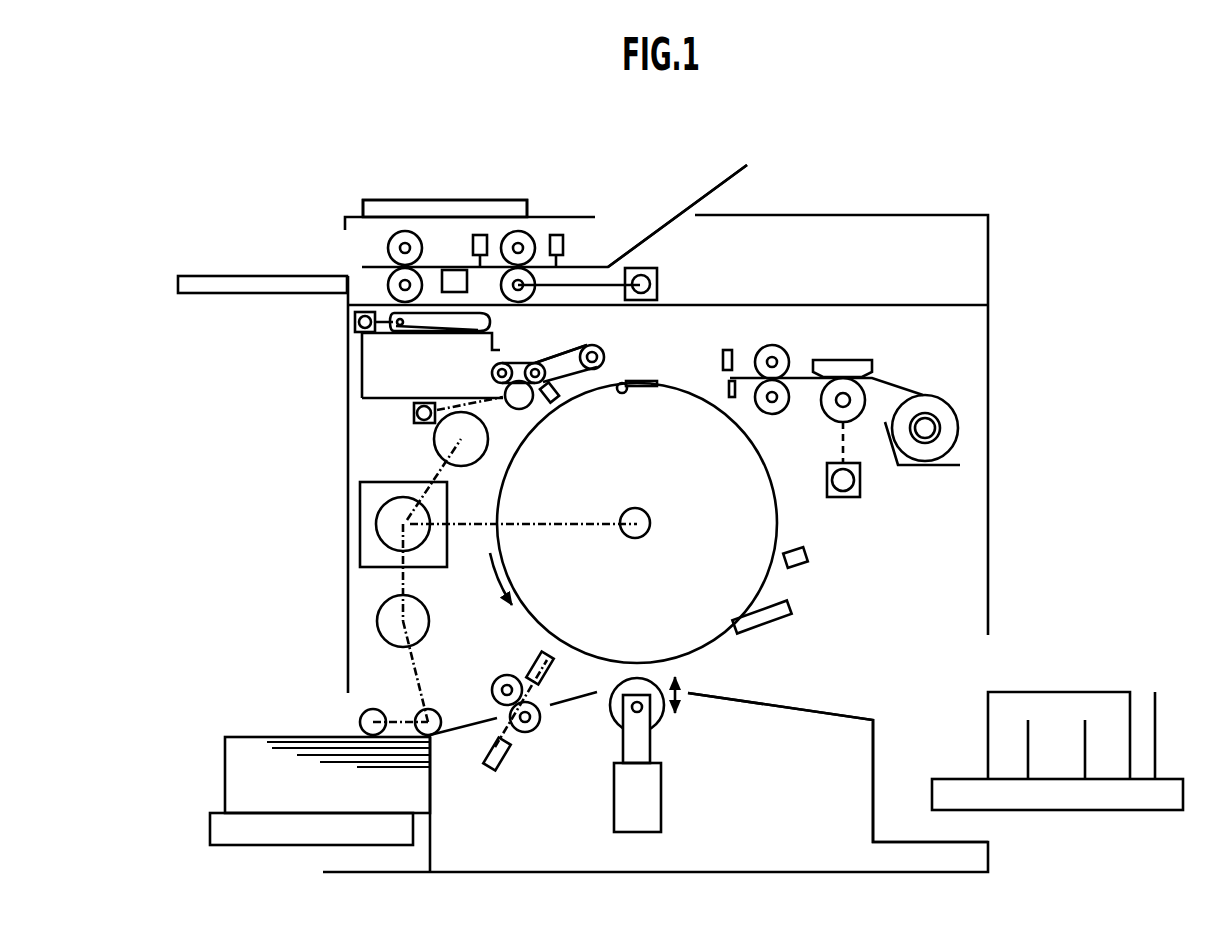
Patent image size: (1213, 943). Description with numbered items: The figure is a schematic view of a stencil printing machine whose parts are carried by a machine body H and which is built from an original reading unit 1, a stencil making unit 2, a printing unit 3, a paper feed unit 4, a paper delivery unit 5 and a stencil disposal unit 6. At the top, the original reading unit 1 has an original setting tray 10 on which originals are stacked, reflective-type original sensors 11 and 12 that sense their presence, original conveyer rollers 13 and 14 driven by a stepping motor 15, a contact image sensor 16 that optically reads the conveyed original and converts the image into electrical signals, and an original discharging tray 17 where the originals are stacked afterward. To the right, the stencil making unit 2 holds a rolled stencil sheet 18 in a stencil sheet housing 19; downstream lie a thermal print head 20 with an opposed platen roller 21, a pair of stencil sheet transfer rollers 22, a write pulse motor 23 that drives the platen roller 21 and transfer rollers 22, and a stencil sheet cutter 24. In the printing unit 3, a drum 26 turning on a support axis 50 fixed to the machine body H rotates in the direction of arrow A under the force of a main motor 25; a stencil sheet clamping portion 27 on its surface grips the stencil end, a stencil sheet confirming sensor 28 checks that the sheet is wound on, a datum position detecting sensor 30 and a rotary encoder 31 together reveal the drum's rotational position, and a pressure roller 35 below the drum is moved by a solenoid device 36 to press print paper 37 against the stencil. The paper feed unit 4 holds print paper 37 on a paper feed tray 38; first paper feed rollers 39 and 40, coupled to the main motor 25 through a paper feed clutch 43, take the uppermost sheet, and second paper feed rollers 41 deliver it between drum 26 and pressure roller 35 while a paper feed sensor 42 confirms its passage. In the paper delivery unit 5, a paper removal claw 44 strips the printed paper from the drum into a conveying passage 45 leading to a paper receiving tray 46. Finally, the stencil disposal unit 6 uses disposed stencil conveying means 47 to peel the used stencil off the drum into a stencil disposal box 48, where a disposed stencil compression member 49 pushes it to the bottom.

The original reading unit 1 is at (538, 214).
The stencil making unit 2 is at (876, 347).
The printing unit 3 is at (694, 671).
The paper feed unit 4 is at (379, 677).
The paper delivery unit 5 is at (881, 661).
The stencil disposal unit 6 is at (608, 342).
The original setting tray 10 is at (700, 197).
The reflective-type original sensor 11 is at (558, 234).
The reflective-type original sensor 12 is at (477, 234).
The original conveyer roller 13 is at (505, 240).
The original conveyer roller 14 is at (389, 268).
The stepping motor 15 is at (658, 271).
The contact image sensor 16 is at (448, 271).
The original discharging tray 17 is at (241, 279).
The stencil sheet 18 is at (917, 394).
The stencil sheet housing 19 is at (961, 452).
The thermal print head 20 is at (848, 360).
The platen roller 21 is at (823, 408).
The stencil sheet transfer roller 22 is at (775, 346).
The write pulse motor 23 is at (861, 482).
The stencil sheet cutter 24 is at (728, 349).
The main motor 25 is at (370, 501).
The drum 26 is at (789, 512).
The stencil sheet clamping portion 27 is at (638, 392).
The stencil sheet confirming sensor 28 is at (555, 404).
The datum position detecting sensor 30 is at (807, 557).
The rotary encoder 31 is at (440, 443).
The pressure roller 35 is at (658, 717).
The solenoid device 36 is at (661, 813).
The print paper 37 is at (242, 736).
The paper feed tray 38 is at (209, 832).
The first paper feed roller 39 is at (356, 720).
The first paper feed roller 40 is at (432, 708).
The second paper feed roller 41 is at (498, 681).
The paper feed sensor 42 is at (552, 676).
The paper feed clutch 43 is at (378, 622).
The paper removal claw 44 is at (793, 610).
The conveying passage 45 is at (844, 718).
The paper receiving tray 46 is at (949, 787).
The disposed stencil conveying means 47 is at (579, 338).
The stencil disposal box 48 is at (367, 381).
The disposed stencil compression member 49 is at (430, 327).
The support axis 50 is at (640, 536).
The arrow A is at (492, 577).
The machine body H is at (994, 542).